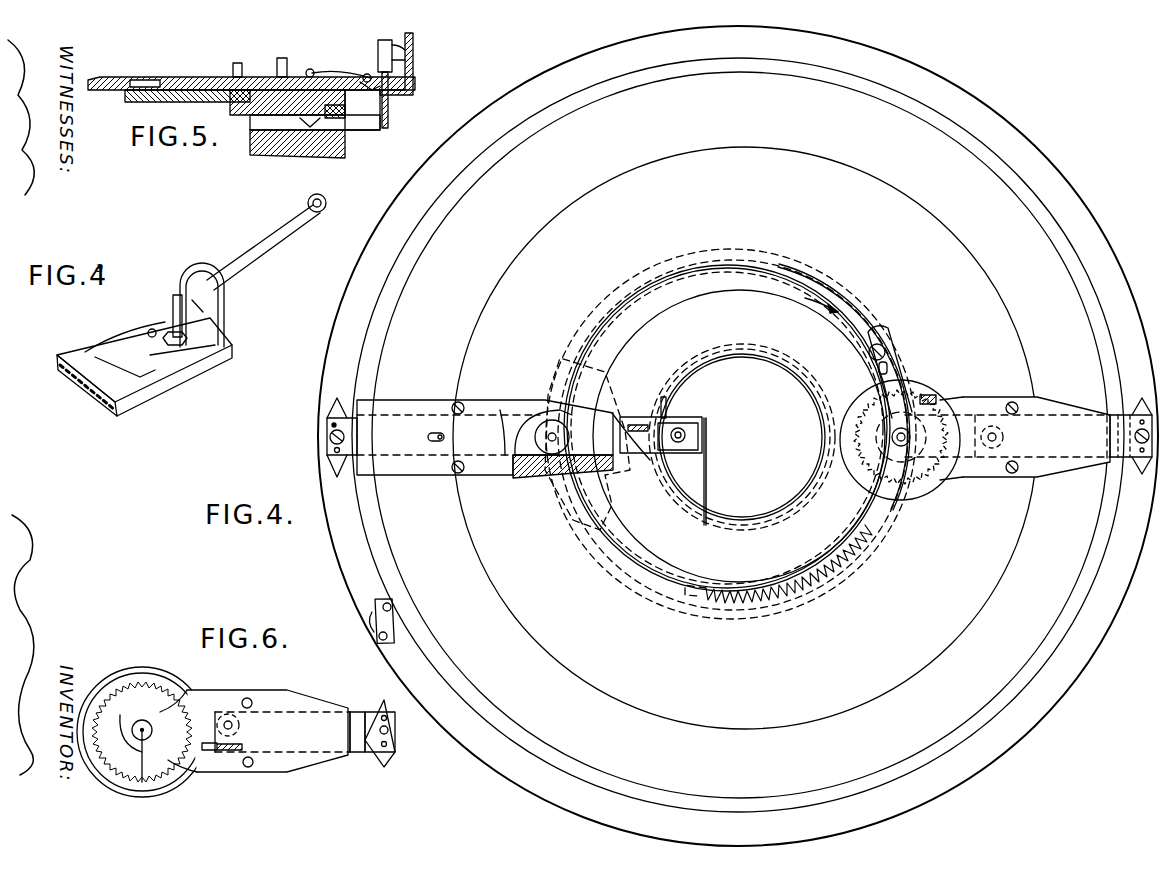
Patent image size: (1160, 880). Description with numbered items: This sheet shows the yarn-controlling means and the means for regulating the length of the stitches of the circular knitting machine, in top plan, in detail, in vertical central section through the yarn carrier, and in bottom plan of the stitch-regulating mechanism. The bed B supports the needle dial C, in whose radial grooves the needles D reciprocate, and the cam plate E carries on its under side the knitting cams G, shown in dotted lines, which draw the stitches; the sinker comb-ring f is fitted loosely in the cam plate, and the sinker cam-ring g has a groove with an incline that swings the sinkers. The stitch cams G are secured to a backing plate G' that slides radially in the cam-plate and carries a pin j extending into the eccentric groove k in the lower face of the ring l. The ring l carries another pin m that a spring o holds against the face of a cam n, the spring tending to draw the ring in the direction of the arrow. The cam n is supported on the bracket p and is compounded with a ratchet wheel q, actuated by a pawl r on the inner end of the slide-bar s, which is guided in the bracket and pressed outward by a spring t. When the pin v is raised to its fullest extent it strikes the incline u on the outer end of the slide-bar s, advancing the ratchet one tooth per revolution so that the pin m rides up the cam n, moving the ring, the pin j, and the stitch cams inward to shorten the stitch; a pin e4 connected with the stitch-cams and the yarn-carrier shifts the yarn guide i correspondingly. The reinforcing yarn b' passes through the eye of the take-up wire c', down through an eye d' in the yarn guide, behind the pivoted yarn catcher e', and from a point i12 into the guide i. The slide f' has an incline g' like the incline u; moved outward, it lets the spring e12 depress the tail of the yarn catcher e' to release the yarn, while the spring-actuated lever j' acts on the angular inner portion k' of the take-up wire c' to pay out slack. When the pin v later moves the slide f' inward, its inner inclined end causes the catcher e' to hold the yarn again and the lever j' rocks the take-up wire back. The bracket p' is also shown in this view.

In FIG. 4, the bed B is at (738, 436).
In FIG. 4, the cam plate E is at (745, 438).
In FIG. 4, the eccentric groove k is at (731, 434).
In FIG. 4, the ring l is at (814, 296).
In FIG. 5, the ring l is at (292, 77).
In FIG. 4, the knitting cams G is at (690, 437).
In FIG. 4, the spring o is at (878, 546).
In FIG. 4, the incline or cam g' is at (454, 436).
In FIG. 4, the slide f' is at (473, 425).
In FIG. 5, the slide f' is at (251, 63).
In FIG. 4A, the slide f' is at (135, 367).
In FIG. 4, the pin j is at (556, 415).
In FIG. 5, the pin j is at (299, 139).
In FIG. 4, the yarn catcher e' is at (663, 456).
In FIG. 5, the yarn catcher e' is at (366, 68).
In FIG. 4A, the yarn catcher e' is at (142, 319).
In FIG. 4, the spring actuated lever j' is at (649, 449).
In FIG. 4A, the spring actuated lever j' is at (202, 345).
In FIG. 4, the take-up wire c' is at (725, 471).
In FIG. 4A, the take-up wire c' is at (303, 235).
In FIG. 4, the ratchet wheel q is at (872, 420).
In FIG. 6, the ratchet wheel q is at (142, 732).
In FIG. 4, the bracket p is at (975, 426).
In FIG. 6, the bracket p is at (213, 731).
In FIG. 4, the slide-bar s is at (1063, 437).
In FIG. 6, the slide-bar s is at (267, 735).
In FIG. 4, the pawl r is at (993, 450).
In FIG. 6, the pawl r is at (222, 712).
In FIG. 4, the pin m is at (886, 404).
In FIG. 4, the incline or cam u is at (1131, 423).
In FIG. 6, the incline or cam u is at (372, 724).
In FIG. 4, the pin v is at (395, 636).
In FIG. 4, the bracket pin p' is at (394, 593).
In FIG. 5, the backing plate G' is at (235, 113).
In FIG. 5, the needle dial C is at (285, 157).
In FIG. 5, the sinker comb-ring f is at (345, 117).
In FIG. 5, the needles D is at (366, 128).
In FIG. 5, the yarn guide i is at (378, 45).
In FIG. 4A, the yarn guide i is at (172, 298).
In FIG. 5, the pin e4 is at (252, 76).
In FIG. 5, the spring e12 is at (336, 78).
In FIG. 4A, the spring e12 is at (117, 345).
In FIG. 5, the sinker cam-ring g is at (341, 69).
In FIG. 5, the reinforcing yarn b' is at (416, 57).
In FIG. 4A, the reinforcing yarn b' is at (266, 242).
In FIG. 5, the eye d' is at (421, 53).
In FIG. 4A, the eye d' is at (193, 274).
In FIG. 5, the point i12 is at (414, 78).
In FIG. 4A, the angular inner portion k' is at (216, 305).
In FIG. 6, the cam n is at (151, 723).
In FIG. 6, the spring t is at (225, 752).